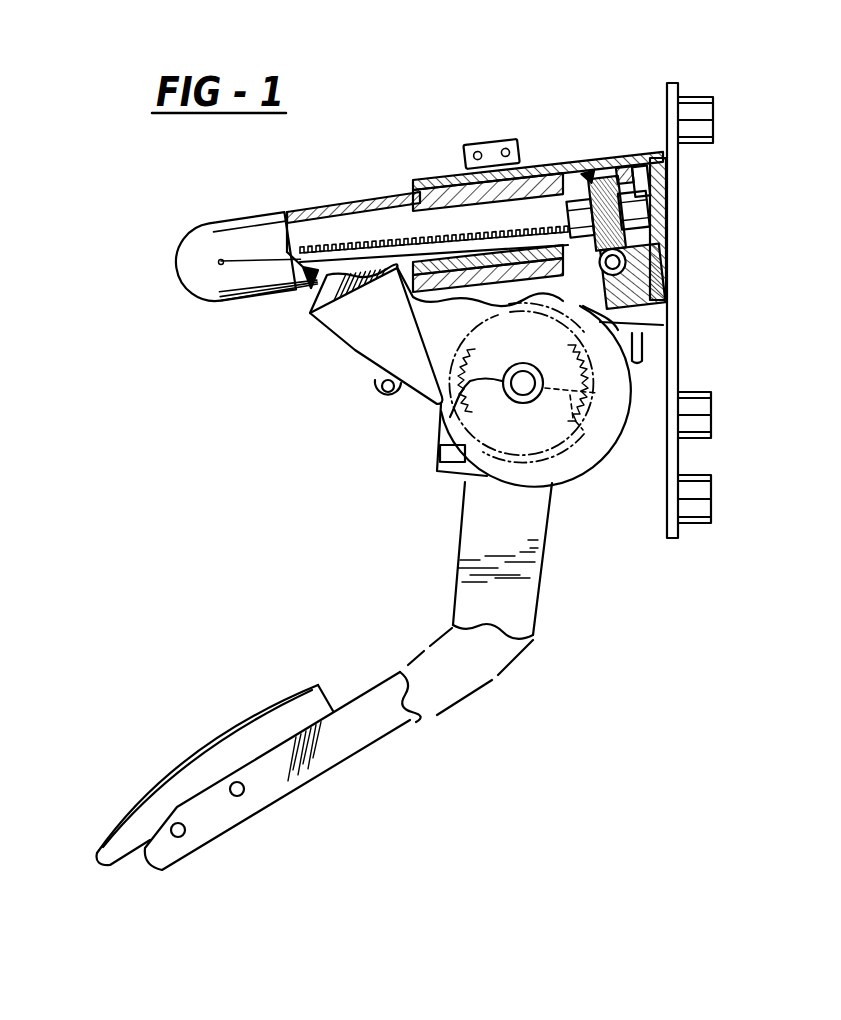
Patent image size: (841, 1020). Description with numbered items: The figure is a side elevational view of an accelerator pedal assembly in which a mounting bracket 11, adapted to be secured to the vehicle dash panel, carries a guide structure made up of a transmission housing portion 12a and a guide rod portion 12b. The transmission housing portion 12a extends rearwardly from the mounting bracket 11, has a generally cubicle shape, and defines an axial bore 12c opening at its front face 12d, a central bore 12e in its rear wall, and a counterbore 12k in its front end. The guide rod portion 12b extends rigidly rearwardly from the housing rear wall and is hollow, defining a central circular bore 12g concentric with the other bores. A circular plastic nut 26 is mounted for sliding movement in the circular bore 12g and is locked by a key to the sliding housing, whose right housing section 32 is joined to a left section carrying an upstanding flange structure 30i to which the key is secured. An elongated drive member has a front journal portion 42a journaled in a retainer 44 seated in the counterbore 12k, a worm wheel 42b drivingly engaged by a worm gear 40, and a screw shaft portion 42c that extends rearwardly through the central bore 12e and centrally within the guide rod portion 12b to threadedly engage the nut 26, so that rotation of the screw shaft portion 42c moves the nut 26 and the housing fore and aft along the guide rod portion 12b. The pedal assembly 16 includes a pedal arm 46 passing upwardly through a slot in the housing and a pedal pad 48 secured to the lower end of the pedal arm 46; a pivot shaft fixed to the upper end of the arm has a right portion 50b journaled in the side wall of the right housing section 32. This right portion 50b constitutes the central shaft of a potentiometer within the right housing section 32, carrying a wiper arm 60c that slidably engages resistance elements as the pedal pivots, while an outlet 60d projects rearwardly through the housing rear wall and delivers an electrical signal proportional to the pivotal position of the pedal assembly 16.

The mounting bracket 11 is at (694, 90).
The transmission housing portion 12a is at (614, 150).
The guide rod portion 12b is at (316, 222).
The axial bore 12c is at (590, 170).
The front face 12d is at (650, 260).
The central bore 12e is at (575, 200).
The circular bore 12g is at (336, 220).
The counterbore 12k is at (666, 176).
The pedal assembly 16 is at (398, 600).
The nut 26 is at (450, 208).
The flange structure 30i is at (476, 147).
The right housing section 32 is at (583, 478).
The worm gear 40 is at (638, 275).
The front journal portion 42a is at (634, 176).
The worm wheel 42b is at (664, 232).
The screw shaft portion 42c is at (312, 292).
The retainer 44 is at (652, 207).
The pedal arm 46 is at (528, 616).
The pedal pad 48 is at (305, 692).
The right pivot shaft portion 50b is at (450, 417).
The wiper arm 60c is at (583, 430).
The outlet 60d is at (330, 315).